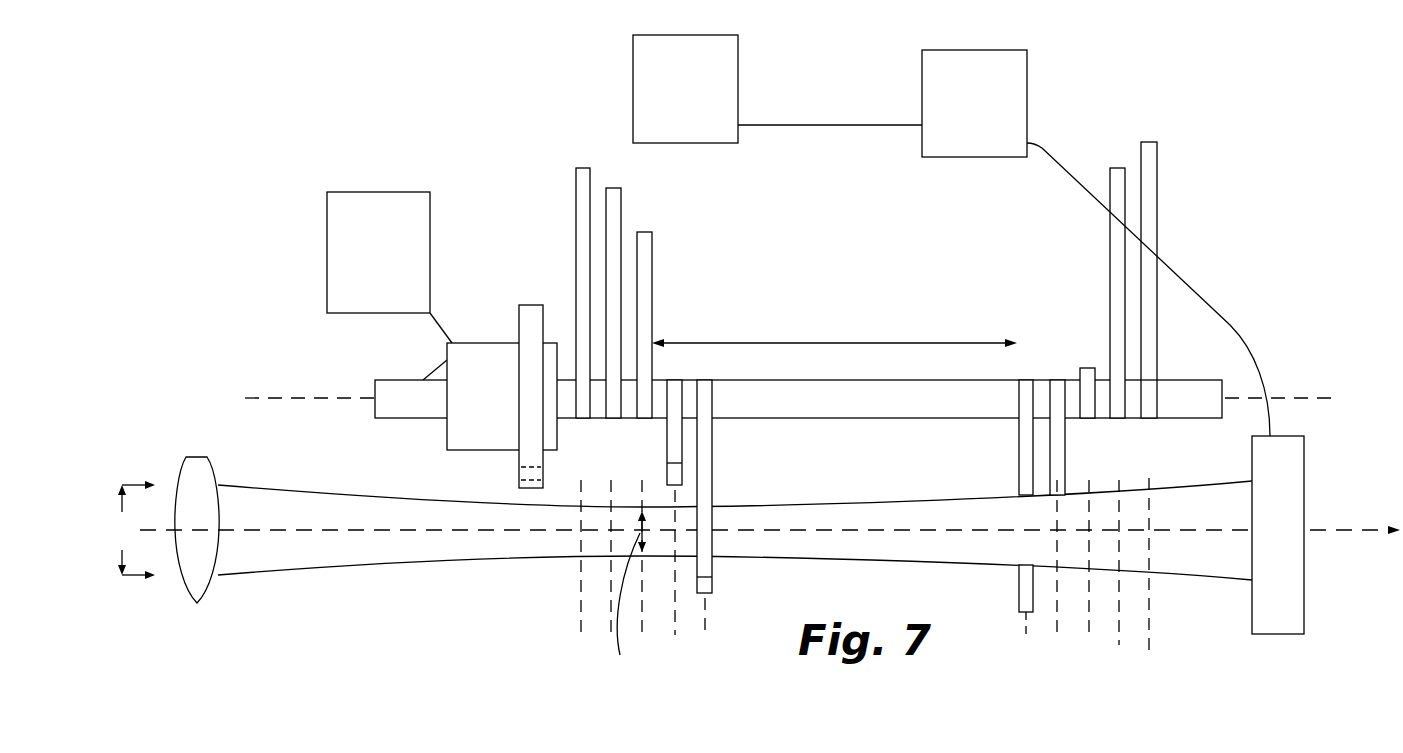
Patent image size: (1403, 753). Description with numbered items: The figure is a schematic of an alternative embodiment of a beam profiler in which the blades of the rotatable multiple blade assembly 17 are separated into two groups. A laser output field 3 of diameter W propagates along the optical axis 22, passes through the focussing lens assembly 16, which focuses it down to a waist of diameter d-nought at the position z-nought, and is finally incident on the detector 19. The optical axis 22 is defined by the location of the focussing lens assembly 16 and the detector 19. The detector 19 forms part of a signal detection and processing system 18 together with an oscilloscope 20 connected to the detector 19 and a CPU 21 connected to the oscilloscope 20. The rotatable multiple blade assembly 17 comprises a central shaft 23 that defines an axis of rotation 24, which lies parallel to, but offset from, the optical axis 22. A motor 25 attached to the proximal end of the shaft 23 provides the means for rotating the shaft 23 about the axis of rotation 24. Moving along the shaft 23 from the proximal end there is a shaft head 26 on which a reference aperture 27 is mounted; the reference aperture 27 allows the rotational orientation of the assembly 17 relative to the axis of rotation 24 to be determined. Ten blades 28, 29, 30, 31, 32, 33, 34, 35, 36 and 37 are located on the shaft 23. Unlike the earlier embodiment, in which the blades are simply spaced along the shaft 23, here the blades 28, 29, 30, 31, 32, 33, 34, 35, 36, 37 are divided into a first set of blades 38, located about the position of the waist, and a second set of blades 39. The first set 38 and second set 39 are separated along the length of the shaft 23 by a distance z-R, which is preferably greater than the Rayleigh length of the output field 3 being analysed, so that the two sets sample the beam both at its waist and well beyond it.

The output field 3 is at (338, 565).
The focussing lens assembly 16 is at (187, 473).
The rotatable multiple blade assembly 17 is at (1185, 355).
The signal detection and processing system 18 is at (1111, 90).
The detector 19 is at (1288, 473).
The oscilloscope 20 is at (1096, 243).
The CPU 21 is at (777, 89).
The optical axis 22 is at (1330, 532).
The central shaft 23 is at (393, 385).
The axis of rotation 24 is at (252, 398).
The motor 25 is at (389, 267).
The shaft head 26 is at (502, 396).
The reference aperture 27 is at (527, 472).
The blade 28 is at (577, 192).
The blade 29 is at (614, 210).
The blade 30 is at (647, 258).
The blade 31 is at (667, 437).
The blade 32 is at (712, 450).
The blade 33 is at (1025, 455).
The blade 34 is at (1058, 455).
The blade 35 is at (1087, 368).
The blade 36 is at (1115, 238).
The blade 37 is at (1150, 180).
The first set of blades 38 is at (834, 294).
The second set of blades 39 is at (1007, 267).